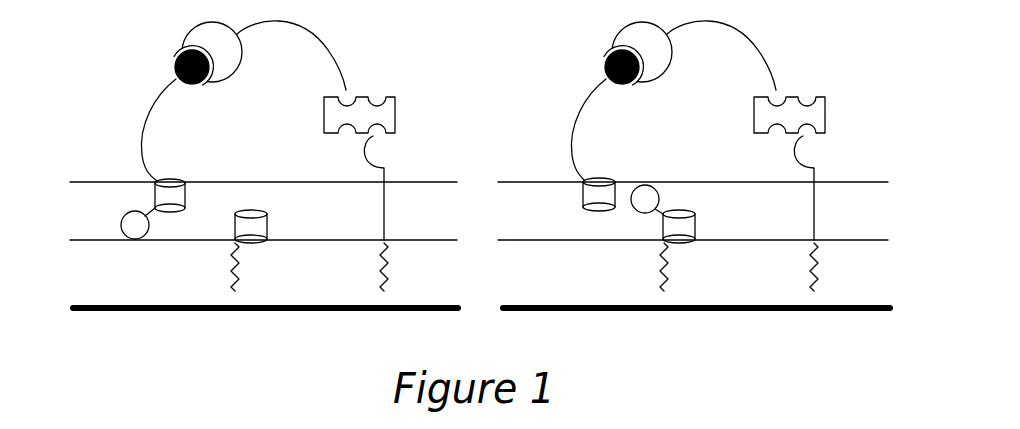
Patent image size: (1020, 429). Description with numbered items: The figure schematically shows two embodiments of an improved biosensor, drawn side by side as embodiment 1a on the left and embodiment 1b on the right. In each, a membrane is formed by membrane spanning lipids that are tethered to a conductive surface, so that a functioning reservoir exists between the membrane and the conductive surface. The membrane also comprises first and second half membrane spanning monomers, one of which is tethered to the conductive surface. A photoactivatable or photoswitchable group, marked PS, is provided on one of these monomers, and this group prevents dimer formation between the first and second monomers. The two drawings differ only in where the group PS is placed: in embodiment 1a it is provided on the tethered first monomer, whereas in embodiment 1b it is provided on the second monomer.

The first embodiment 1a is at (258, 184).
The second embodiment 1b is at (698, 184).